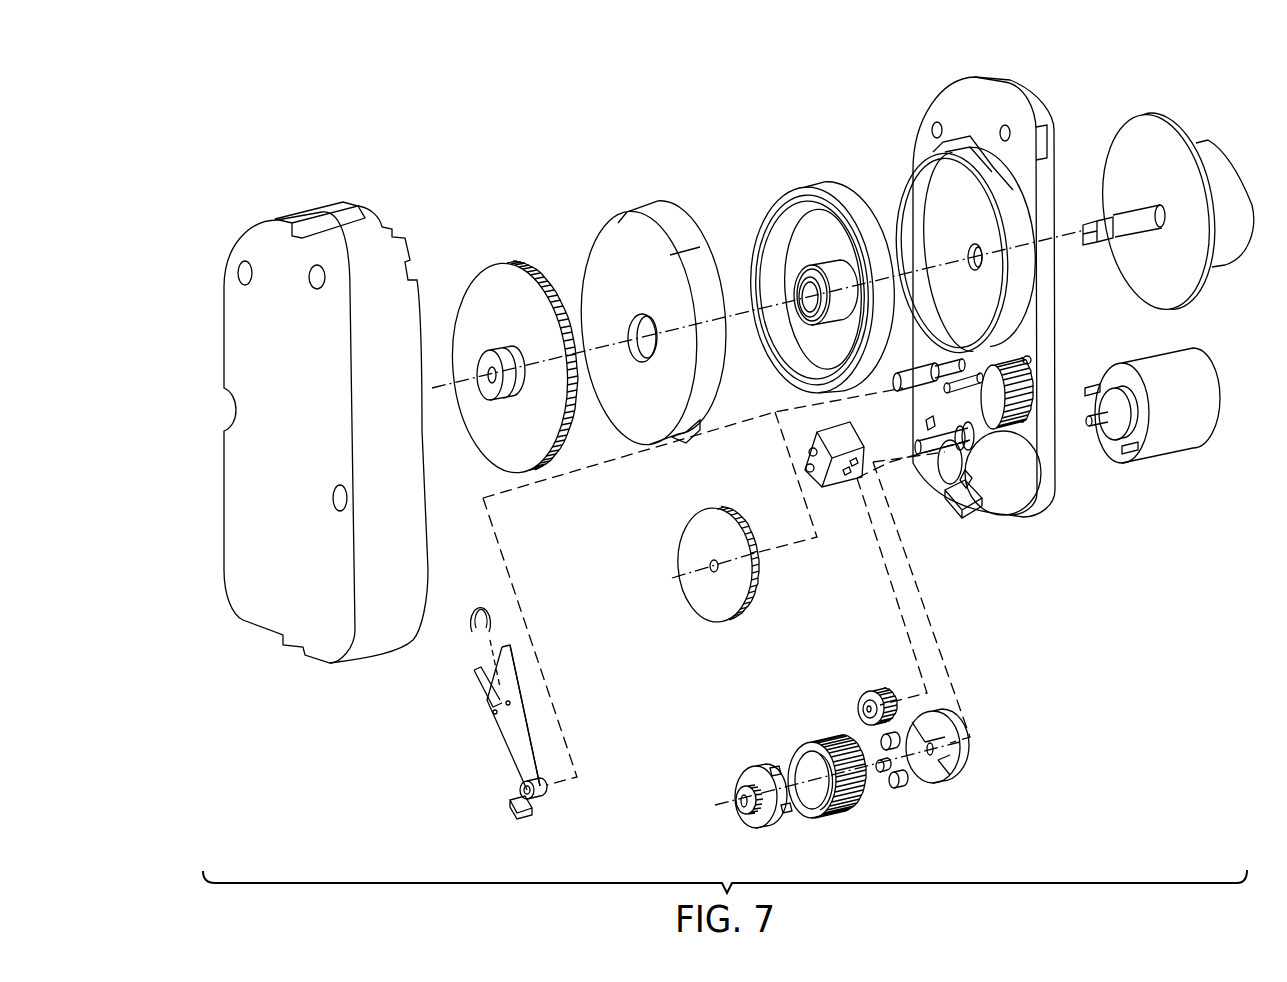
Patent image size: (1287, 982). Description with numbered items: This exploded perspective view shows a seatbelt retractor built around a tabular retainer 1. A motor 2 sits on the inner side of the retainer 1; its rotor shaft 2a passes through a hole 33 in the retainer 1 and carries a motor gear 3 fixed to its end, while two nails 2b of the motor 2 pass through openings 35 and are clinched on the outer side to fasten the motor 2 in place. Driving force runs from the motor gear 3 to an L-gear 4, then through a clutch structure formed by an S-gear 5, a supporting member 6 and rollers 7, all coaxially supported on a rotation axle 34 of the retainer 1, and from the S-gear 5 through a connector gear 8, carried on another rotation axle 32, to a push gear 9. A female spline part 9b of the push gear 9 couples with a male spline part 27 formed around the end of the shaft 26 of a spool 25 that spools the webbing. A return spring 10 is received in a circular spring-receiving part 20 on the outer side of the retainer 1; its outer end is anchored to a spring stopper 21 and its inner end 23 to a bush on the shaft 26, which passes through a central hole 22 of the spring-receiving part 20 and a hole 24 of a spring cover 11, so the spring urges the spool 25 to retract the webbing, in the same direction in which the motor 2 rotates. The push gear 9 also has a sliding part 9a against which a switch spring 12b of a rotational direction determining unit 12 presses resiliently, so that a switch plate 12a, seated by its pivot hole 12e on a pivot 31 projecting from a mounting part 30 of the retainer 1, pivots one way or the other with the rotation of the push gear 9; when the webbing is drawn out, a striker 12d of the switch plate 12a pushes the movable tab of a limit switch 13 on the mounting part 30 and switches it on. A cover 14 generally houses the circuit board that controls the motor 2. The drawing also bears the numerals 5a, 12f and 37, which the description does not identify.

The tabular retainer 1 is at (1030, 103).
The motor 2 is at (1128, 374).
The rotor shaft 2a is at (1096, 428).
The nails 2b is at (1090, 388).
The motor gear 3 is at (868, 692).
The L-gear 4 is at (833, 813).
The S-gear 5 is at (774, 818).
The pinion of gear 5 5a is at (771, 768).
The supporting member 6 is at (948, 772).
The rollers 7 is at (898, 786).
The connector gear 8 is at (725, 625).
The push gear 9 is at (508, 262).
The sliding part 9a is at (508, 353).
The female spline part 9b is at (490, 380).
The return spring 10 is at (828, 193).
The spring cover 11 is at (672, 213).
The rotational direction determining unit 12 is at (432, 728).
The switch plate 12a is at (505, 742).
The switch spring 12b is at (478, 602).
The striker 12d is at (523, 814).
The pivot hole 12e is at (519, 794).
The lever fork arm 12f is at (476, 674).
The limit switch 13 is at (823, 485).
The cover 14 is at (362, 222).
The spring-receiving part 20 is at (935, 196).
The spring stopper 21 is at (950, 156).
The central hole 22 is at (969, 256).
The inner end 23 is at (806, 302).
The hole 24 is at (643, 326).
The spool 25 is at (1157, 108).
The shaft 26 is at (1140, 209).
The male spline part 27 is at (1087, 225).
The mounting part 30 is at (1012, 422).
The pivot 31 is at (958, 380).
The rotation axle 32 is at (925, 372).
The hole 33 is at (946, 475).
The rotation axle 34 is at (1005, 513).
The openings 35 is at (970, 486).
The block 37 is at (960, 510).